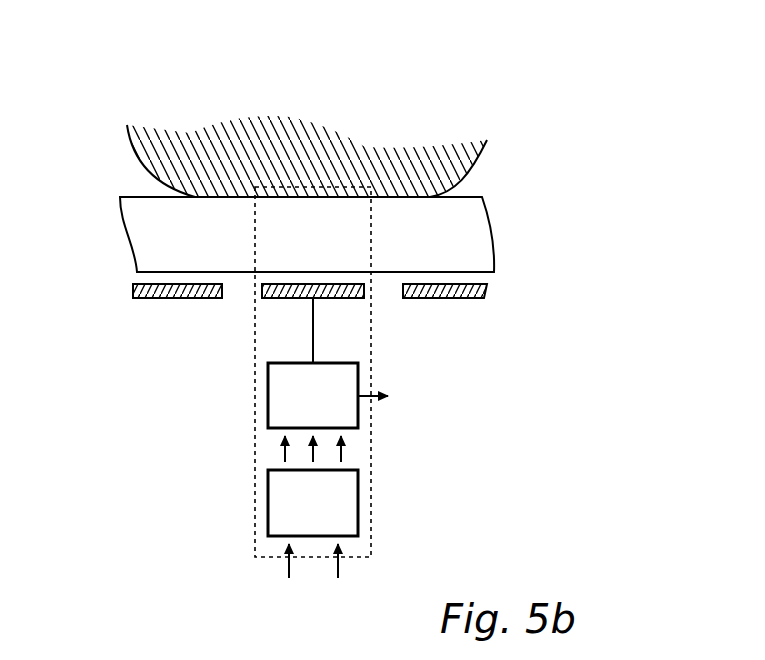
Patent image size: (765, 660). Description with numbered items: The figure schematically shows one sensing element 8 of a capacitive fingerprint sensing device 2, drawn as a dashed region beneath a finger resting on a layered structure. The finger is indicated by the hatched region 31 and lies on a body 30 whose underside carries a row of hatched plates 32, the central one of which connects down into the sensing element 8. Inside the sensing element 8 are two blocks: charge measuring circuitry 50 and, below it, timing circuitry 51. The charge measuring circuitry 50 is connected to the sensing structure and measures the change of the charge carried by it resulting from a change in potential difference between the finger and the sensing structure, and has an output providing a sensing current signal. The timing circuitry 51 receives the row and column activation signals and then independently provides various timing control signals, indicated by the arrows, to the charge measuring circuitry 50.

The capacitive fingerprint sensing device 2 is at (546, 164).
The sensing element 8 is at (243, 372).
The substrate 30 is at (153, 242).
The tissue / object 31 is at (185, 167).
The electrodes 32 is at (340, 298).
The charge measuring circuitry 50 is at (342, 413).
The timing circuitry 51 is at (338, 525).